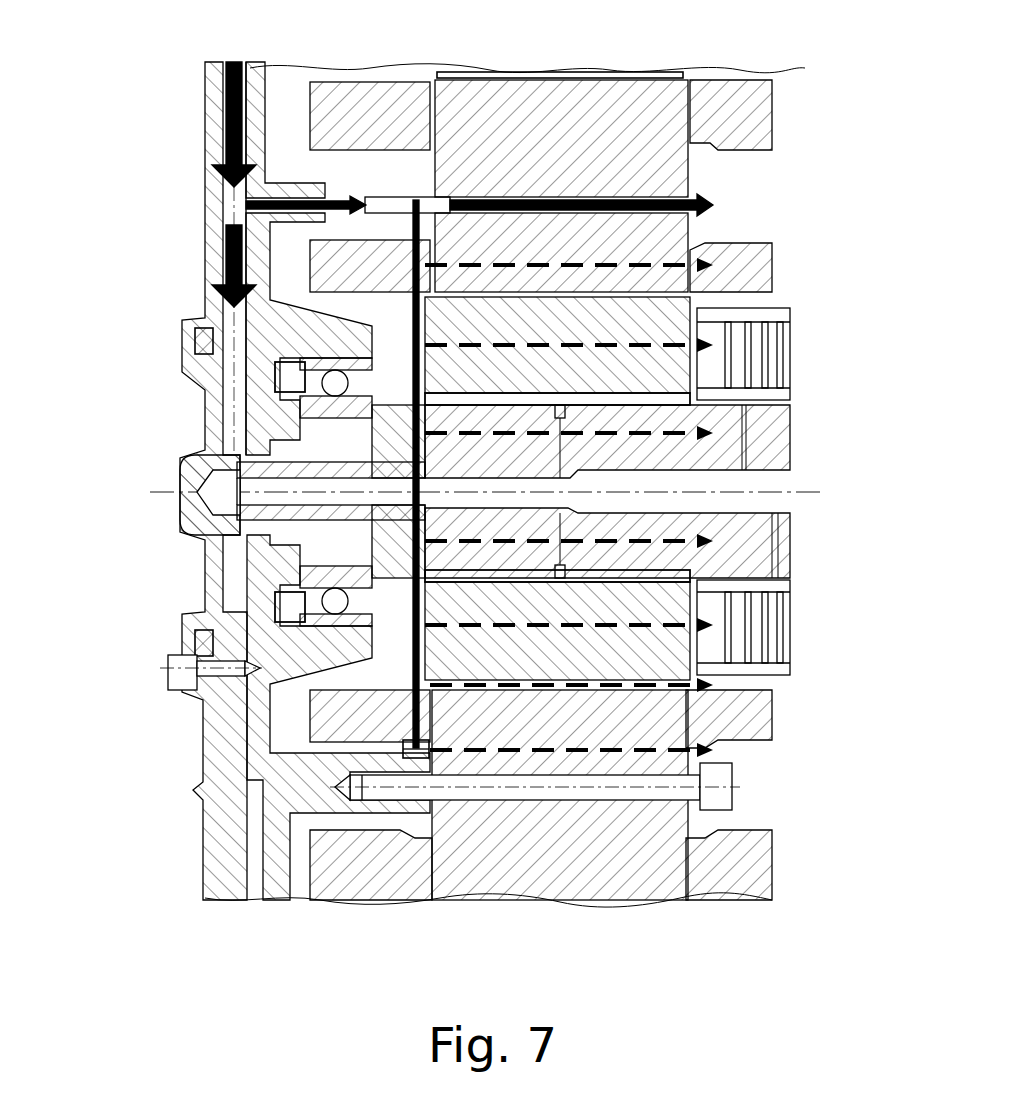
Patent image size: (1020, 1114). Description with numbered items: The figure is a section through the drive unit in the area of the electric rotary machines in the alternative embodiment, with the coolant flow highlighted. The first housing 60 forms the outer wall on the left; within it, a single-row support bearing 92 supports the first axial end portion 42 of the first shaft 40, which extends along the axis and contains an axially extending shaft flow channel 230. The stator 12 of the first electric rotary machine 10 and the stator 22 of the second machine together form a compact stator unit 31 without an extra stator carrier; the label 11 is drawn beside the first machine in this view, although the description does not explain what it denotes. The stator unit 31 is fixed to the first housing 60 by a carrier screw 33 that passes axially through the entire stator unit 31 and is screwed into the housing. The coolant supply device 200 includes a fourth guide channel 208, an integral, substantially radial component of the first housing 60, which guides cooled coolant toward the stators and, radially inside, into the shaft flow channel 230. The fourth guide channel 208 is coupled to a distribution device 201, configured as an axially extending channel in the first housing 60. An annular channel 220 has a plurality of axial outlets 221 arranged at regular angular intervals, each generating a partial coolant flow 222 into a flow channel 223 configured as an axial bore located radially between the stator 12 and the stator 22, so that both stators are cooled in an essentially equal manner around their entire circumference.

The coolant supply device 200 is at (145, 158).
The distribution device 201 is at (205, 197).
The fourth guide channel 208 is at (205, 93).
The annular channel 220 is at (418, 200).
The axial outlet 221 is at (465, 198).
The partial coolant flow 222 is at (650, 225).
The flow channel 223 is at (620, 183).
The shaft flow channel 230 is at (752, 483).
The stator unit 31 is at (800, 728).
The carrier screw 33 is at (715, 788).
The first shaft 40 is at (223, 492).
The first axial end portion 42 is at (300, 445).
The support bearing 92 is at (265, 600).
The first electric rotary machine 10 is at (214, 481).
The housing wall 11 is at (280, 683).
The stator 12 is at (280, 745).
The first housing 60 is at (235, 795).
The stator 22 is at (492, 887).